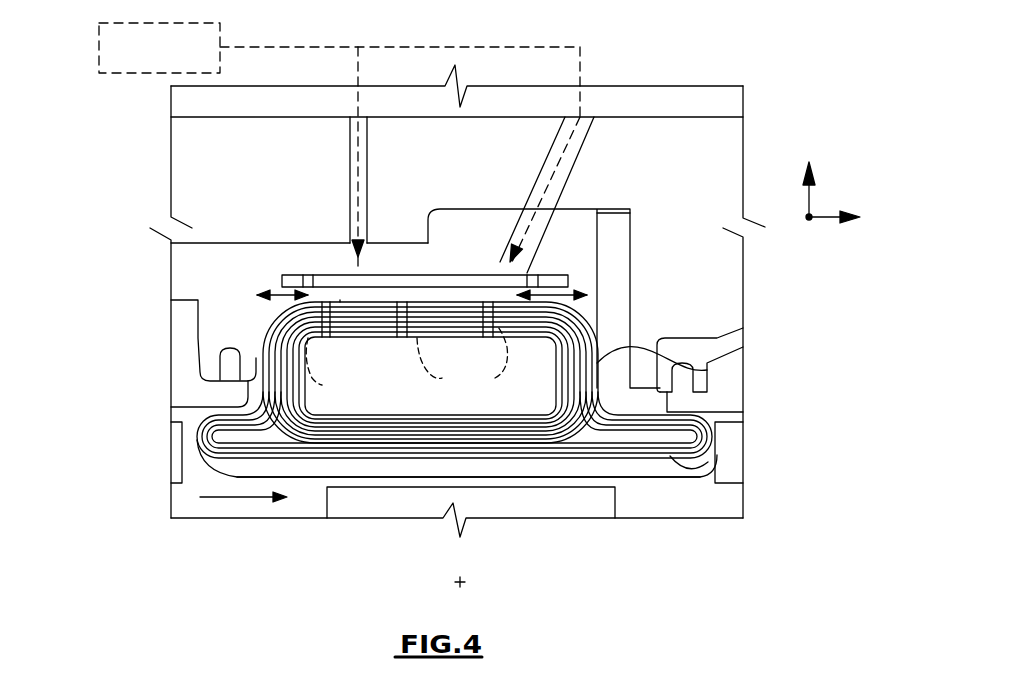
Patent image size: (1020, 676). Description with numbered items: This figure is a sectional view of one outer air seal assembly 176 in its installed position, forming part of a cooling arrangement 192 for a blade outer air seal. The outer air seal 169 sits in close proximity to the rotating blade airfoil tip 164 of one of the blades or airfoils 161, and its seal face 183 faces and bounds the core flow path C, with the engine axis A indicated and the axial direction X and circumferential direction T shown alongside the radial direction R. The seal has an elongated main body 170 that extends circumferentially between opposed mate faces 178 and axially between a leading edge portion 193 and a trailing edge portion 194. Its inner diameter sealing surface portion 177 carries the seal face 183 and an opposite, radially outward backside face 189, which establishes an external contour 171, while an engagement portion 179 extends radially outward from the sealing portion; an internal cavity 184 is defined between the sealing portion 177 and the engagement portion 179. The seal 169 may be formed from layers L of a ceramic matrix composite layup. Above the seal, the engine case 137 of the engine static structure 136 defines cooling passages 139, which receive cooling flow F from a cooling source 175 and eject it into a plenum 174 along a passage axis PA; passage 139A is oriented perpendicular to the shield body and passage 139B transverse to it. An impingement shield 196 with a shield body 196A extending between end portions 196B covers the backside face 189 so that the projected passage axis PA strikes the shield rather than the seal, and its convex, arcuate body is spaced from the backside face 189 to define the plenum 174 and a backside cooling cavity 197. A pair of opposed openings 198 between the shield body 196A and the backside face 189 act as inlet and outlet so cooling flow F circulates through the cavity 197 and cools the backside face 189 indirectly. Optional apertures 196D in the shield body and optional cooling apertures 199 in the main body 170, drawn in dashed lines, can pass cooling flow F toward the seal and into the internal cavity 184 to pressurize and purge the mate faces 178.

The engine static structure 136 is at (406, 301).
The engine case 137 is at (185, 190).
The cooling passages 139 is at (397, 195).
The cooling passage 139A is at (350, 150).
The cooling passage 139B is at (545, 148).
The blades or airfoils 161 is at (327, 490).
The rotating blade airfoil tip 164 is at (353, 490).
The outer air seal 169 is at (260, 358).
The main body 170 is at (593, 327).
The external contour 171 is at (340, 300).
The plenum 174 is at (485, 240).
The cooling source 175 is at (183, 61).
The outer air seal assembly 176 is at (150, 143).
The inner diameter sealing surface portion 177 is at (660, 470).
The mate faces 178 is at (685, 432).
The engagement portion 179 is at (597, 357).
The seal face 183 is at (668, 477).
The internal cavity 184 is at (445, 408).
The backside face 189 is at (548, 280).
The cooling arrangement 192 is at (628, 82).
The leading edge portion 193 is at (255, 328).
The trailing edge portion 194 is at (710, 368).
The impingement shield 196 is at (464, 225).
The shield body 196A is at (382, 275).
The end portions 196B is at (363, 294).
The apertures 196D is at (325, 280).
The backside cooling cavity 197 is at (435, 294).
The openings 198 is at (276, 306).
The cooling apertures 199 is at (406, 362).
The passage axis PA is at (372, 170).
The cooling flow F is at (368, 213).
The layers L is at (590, 310).
The radial direction R is at (808, 178).
The axial direction X is at (846, 220).
The circumferential direction T is at (805, 220).
The core flow path C is at (228, 497).
The axis A is at (460, 585).